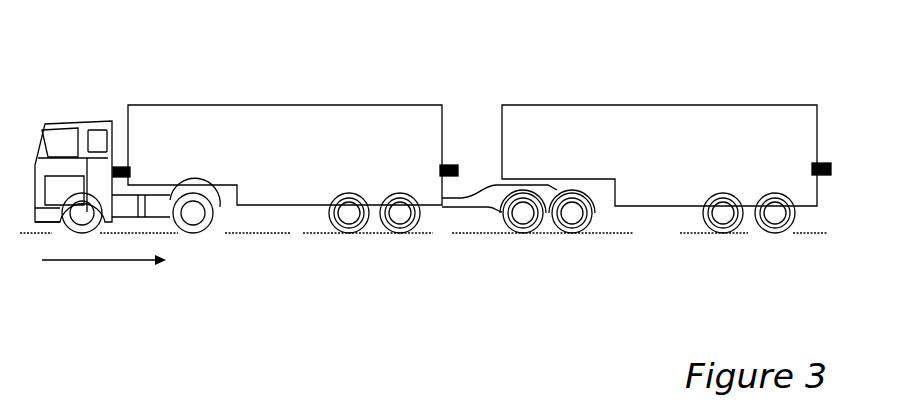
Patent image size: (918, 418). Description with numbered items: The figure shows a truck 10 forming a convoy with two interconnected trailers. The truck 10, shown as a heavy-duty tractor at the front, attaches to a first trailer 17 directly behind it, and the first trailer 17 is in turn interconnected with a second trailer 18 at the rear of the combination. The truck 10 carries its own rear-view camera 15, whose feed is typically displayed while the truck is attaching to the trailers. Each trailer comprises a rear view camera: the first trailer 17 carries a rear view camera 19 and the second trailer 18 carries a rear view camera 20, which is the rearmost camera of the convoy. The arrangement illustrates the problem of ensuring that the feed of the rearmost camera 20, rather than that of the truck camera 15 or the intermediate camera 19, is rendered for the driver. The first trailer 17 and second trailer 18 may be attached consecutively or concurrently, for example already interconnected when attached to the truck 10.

The truck 10 is at (80, 118).
The rear-view camera of the truck 15 is at (120, 165).
The first trailer 17 is at (315, 105).
The second trailer 18 is at (675, 105).
The rear view camera 19 is at (458, 165).
The rear view camera 20 is at (828, 163).